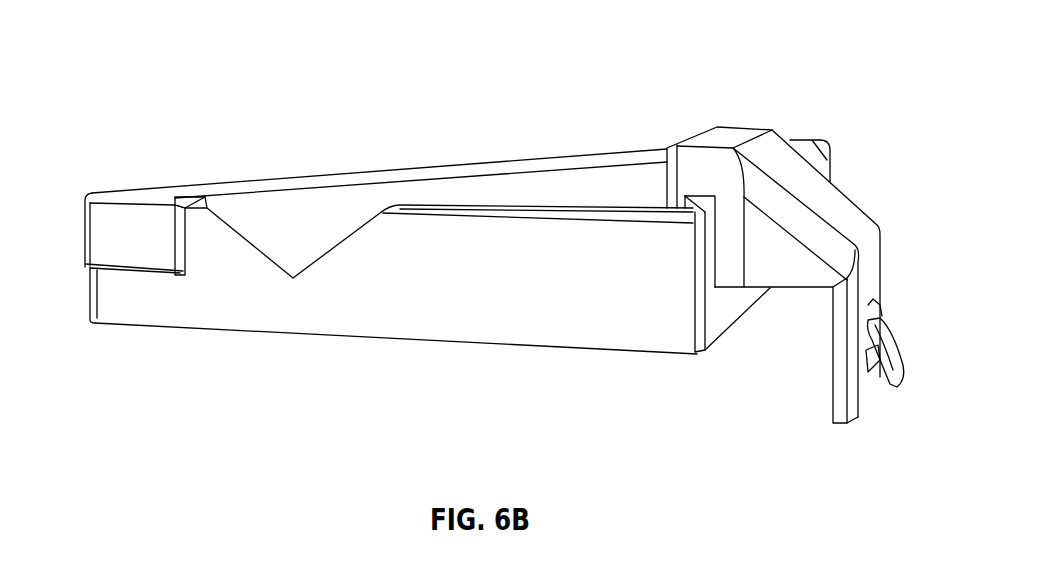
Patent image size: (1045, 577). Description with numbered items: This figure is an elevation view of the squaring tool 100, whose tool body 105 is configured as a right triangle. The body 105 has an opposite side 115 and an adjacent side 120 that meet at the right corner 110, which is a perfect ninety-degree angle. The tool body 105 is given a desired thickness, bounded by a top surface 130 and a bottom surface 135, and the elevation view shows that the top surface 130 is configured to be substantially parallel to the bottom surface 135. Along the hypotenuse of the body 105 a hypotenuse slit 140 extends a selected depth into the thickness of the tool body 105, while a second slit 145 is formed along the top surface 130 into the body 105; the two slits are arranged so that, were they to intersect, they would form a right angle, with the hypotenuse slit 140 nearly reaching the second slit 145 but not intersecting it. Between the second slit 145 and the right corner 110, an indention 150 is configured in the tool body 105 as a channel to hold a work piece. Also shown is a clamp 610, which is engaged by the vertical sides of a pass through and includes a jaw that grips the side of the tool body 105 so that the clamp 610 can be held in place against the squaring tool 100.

The squaring tool 100 is at (147, 56).
The tool body 105 is at (113, 145).
The right corner 110 is at (705, 349).
The opposite side 115 is at (458, 322).
The adjacent side 120 is at (828, 167).
The top surface 130 is at (462, 157).
The bottom surface 135 is at (582, 357).
The hypotenuse slit 140 is at (103, 267).
The second slit 145 is at (170, 270).
The indention 150 is at (293, 253).
The clamp 610 is at (100, 185).